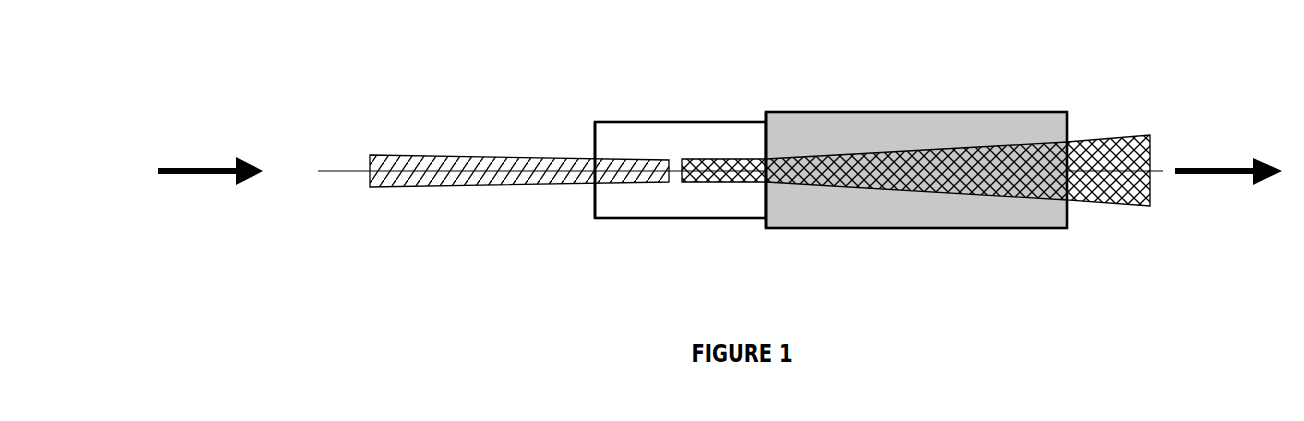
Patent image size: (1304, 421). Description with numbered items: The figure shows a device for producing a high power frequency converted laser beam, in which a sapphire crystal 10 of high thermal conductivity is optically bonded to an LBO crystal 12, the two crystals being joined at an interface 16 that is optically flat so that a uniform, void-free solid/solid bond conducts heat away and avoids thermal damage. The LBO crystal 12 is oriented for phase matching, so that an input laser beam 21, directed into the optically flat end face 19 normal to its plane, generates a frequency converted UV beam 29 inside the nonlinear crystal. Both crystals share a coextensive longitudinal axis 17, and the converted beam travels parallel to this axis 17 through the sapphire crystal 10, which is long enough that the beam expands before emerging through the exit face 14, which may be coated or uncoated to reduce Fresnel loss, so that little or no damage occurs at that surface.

The sapphire crystal 10 is at (932, 112).
The LBO crystal 12 is at (672, 122).
The exit face 14 is at (1070, 155).
The interface 16 is at (765, 140).
The longitudinal axis 17 is at (343, 171).
The end face 19 is at (593, 143).
The input laser beam 21 is at (460, 155).
The UV beam 29 is at (715, 183).